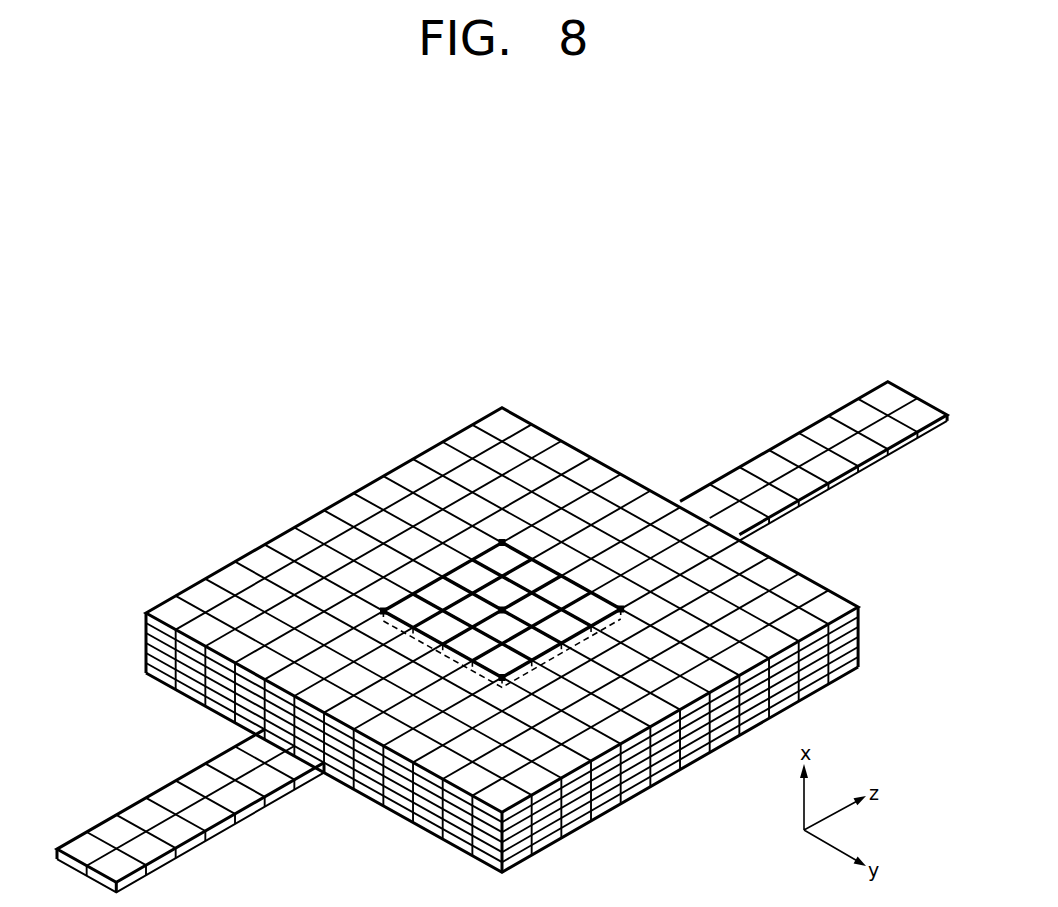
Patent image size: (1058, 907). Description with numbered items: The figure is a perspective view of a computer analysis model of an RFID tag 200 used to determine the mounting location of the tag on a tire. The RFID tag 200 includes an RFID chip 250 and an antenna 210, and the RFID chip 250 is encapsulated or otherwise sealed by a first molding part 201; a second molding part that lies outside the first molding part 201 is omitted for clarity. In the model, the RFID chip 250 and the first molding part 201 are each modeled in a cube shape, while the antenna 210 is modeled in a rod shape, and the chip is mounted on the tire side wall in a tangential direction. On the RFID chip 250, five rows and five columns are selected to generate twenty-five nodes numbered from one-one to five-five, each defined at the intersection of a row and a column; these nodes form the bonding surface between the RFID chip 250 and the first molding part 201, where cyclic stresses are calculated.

The RFID tag 200 is at (280, 431).
The first molding part 201 is at (498, 422).
The antenna 210 is at (770, 448).
The RFID chip 250 is at (490, 553).